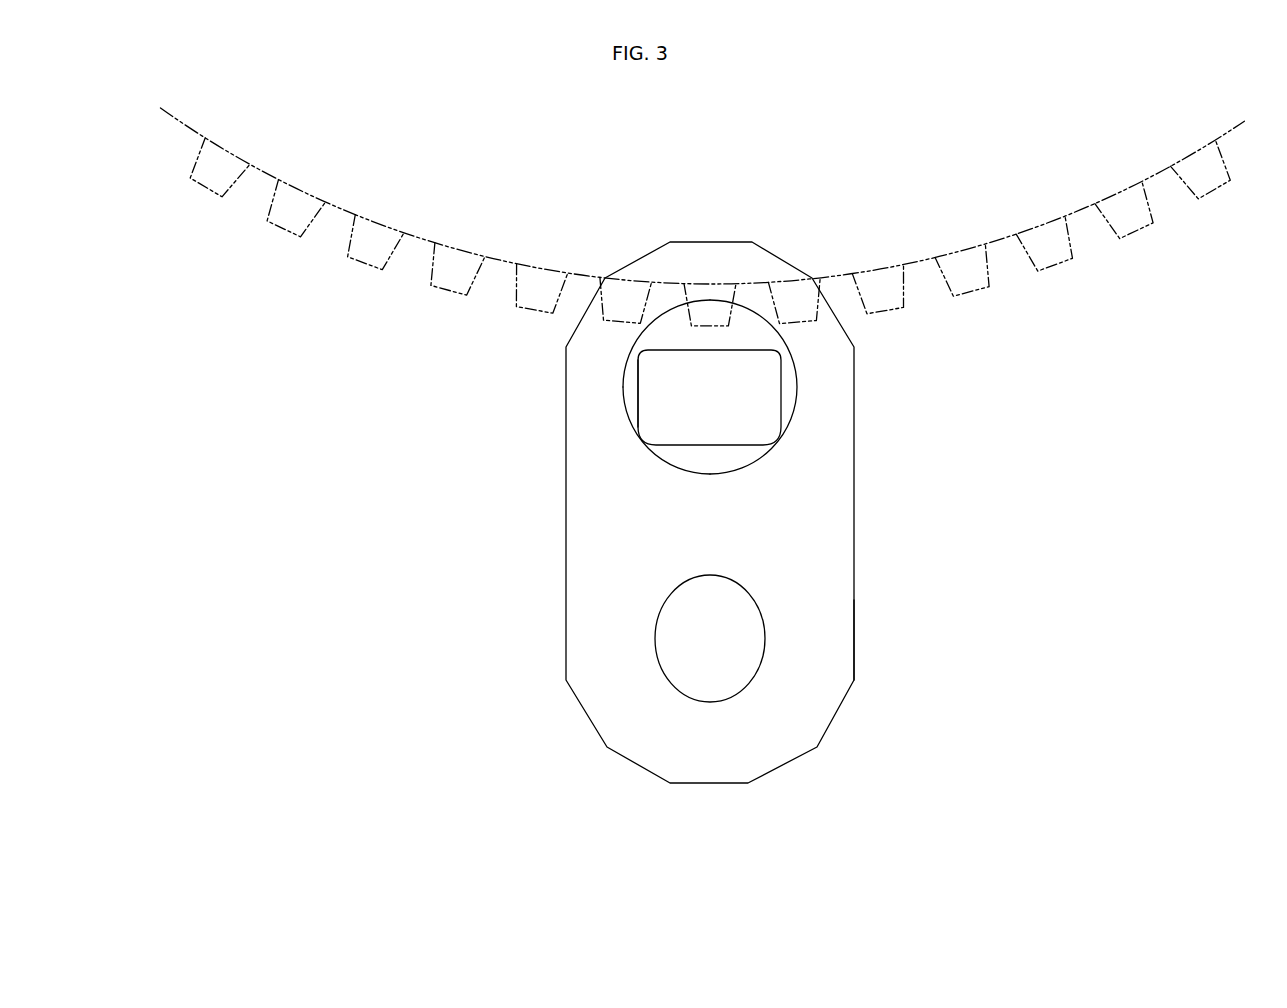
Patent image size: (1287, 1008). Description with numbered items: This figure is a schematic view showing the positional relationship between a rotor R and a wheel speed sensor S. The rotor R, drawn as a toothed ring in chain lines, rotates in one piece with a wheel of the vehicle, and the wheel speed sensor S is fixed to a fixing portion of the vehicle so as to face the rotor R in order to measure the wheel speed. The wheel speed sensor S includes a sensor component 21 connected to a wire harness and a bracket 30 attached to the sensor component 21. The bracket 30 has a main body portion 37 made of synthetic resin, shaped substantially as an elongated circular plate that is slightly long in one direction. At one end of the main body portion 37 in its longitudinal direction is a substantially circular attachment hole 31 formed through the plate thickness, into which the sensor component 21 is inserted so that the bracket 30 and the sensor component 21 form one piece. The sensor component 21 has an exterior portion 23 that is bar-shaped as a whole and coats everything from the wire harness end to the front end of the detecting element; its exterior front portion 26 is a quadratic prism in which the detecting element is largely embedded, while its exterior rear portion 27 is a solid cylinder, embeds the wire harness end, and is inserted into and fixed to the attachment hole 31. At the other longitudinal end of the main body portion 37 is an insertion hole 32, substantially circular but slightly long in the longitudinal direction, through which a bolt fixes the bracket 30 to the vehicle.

The rotor R is at (963, 278).
The wheel speed sensor S is at (446, 484).
The bracket 30 is at (817, 722).
The main body portion 37 is at (840, 655).
The attachment hole 31 is at (773, 327).
The exterior rear portion 27 is at (680, 457).
The exterior portion 23 is at (732, 458).
The exterior front portion 26 is at (657, 374).
The sensor component 21 is at (660, 418).
The insertion hole 32 is at (735, 693).